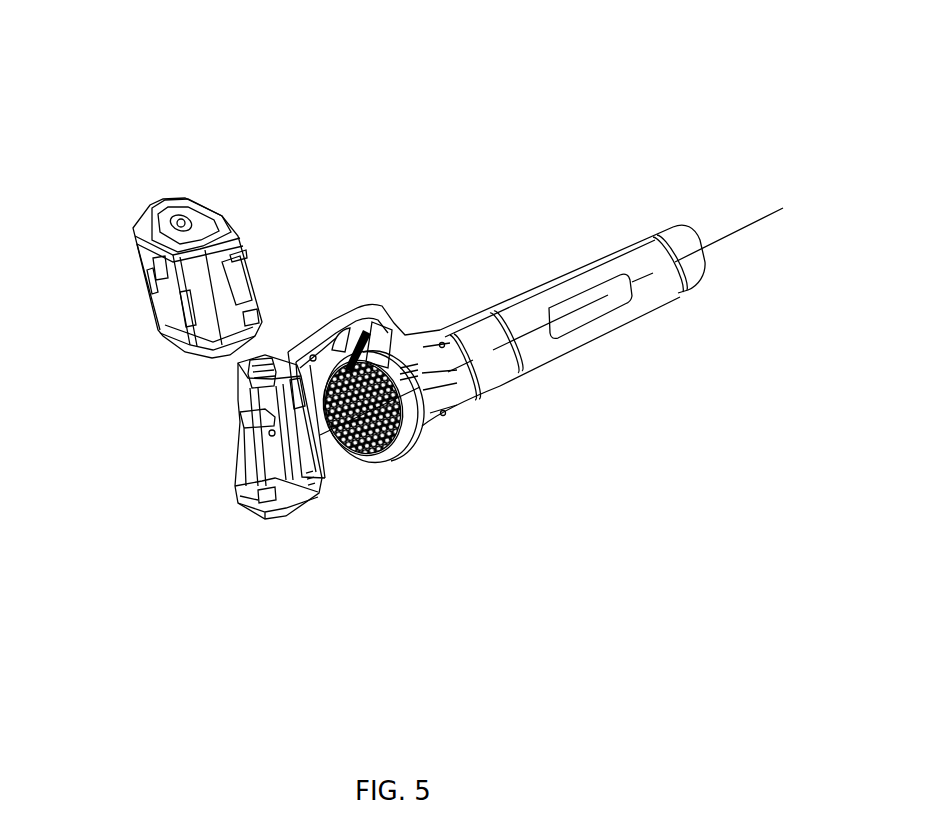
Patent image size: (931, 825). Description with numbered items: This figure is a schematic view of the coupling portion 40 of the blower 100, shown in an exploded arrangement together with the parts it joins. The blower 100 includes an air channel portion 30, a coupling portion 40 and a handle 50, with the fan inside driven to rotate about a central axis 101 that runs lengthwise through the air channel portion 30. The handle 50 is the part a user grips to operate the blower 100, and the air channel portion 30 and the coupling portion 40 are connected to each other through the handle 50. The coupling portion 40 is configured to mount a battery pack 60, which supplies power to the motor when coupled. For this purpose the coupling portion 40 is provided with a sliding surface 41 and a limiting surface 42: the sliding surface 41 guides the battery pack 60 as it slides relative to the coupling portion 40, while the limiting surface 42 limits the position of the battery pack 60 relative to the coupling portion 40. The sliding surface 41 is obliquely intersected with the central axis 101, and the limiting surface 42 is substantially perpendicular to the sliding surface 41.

The blower 100 is at (491, 97).
The central axis 101 is at (554, 307).
The air channel portion 30 is at (560, 271).
The coupling portion 40 is at (322, 485).
The sliding surface 41 is at (241, 430).
The limiting surface 42 is at (246, 486).
The handle 50 is at (320, 330).
The battery pack 60 is at (148, 312).